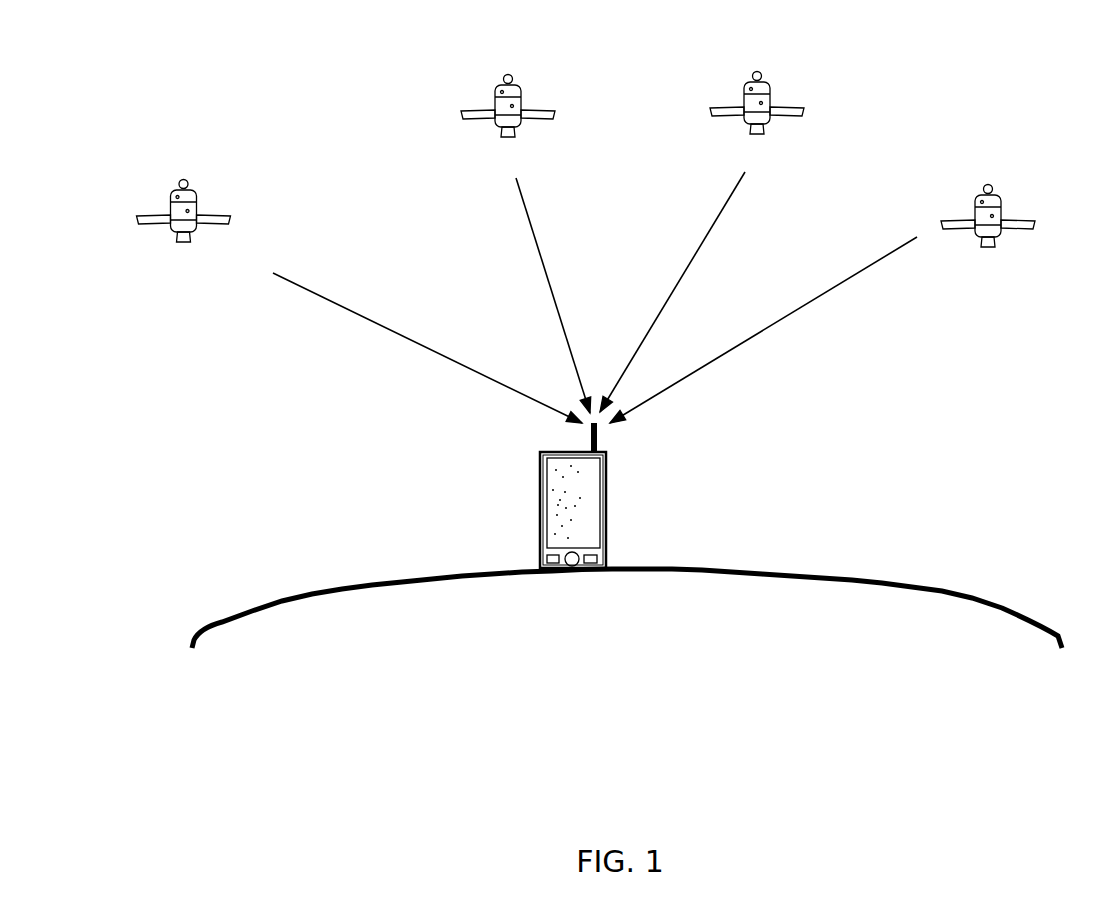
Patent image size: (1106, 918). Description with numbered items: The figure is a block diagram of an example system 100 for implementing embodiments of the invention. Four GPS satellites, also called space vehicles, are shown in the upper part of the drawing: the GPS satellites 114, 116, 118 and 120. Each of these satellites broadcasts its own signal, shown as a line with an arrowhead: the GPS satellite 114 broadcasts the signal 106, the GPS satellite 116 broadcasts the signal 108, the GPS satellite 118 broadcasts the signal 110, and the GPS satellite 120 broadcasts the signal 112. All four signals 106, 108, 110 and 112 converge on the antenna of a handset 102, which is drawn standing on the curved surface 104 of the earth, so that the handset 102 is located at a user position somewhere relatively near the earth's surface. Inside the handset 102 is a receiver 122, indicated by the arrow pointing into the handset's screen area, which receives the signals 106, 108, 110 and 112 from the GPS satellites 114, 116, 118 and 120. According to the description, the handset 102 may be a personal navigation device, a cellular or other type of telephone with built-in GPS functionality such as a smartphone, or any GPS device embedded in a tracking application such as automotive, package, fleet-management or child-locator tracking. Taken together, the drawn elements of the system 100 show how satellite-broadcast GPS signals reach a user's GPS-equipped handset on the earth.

The system 100 is at (900, 140).
The handset 102 is at (554, 495).
The surface of earth 104 is at (480, 580).
The signal 106 is at (408, 340).
The signal 108 is at (540, 255).
The signal 110 is at (693, 260).
The signal 112 is at (738, 342).
The GPS satellite 114 is at (182, 226).
The GPS satellite 116 is at (510, 123).
The GPS satellite 118 is at (755, 120).
The GPS satellite 120 is at (990, 234).
The receiver 122 is at (570, 495).